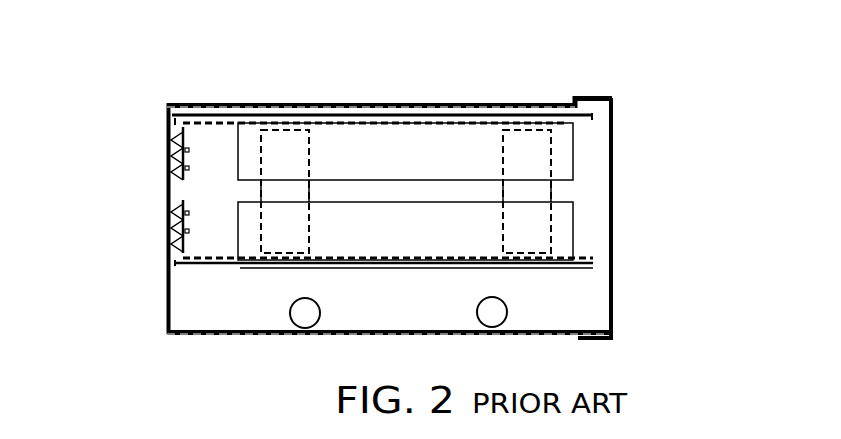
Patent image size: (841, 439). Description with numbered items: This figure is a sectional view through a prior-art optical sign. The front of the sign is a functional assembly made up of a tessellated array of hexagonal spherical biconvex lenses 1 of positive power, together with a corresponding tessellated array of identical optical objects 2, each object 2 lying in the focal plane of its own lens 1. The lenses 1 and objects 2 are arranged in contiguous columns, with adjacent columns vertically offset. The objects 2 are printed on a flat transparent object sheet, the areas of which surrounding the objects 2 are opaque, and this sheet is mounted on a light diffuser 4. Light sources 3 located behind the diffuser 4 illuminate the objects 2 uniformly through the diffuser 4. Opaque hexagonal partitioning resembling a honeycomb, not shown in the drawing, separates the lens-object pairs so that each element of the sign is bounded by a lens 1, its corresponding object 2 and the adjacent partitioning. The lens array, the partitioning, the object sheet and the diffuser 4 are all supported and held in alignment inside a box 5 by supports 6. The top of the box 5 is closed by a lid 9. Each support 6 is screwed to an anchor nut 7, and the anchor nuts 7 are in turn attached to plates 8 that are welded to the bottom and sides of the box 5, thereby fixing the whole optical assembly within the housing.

The hexagonal spherical biconvex lens 1 is at (462, 116).
The optical object 2 is at (590, 262).
The light source 3 is at (300, 312).
The light diffuser 4 is at (593, 266).
The box 5 is at (168, 302).
The support 6 is at (340, 141).
The anchor nut 7 is at (168, 213).
The plate 8 is at (276, 140).
The lid 9 is at (613, 128).